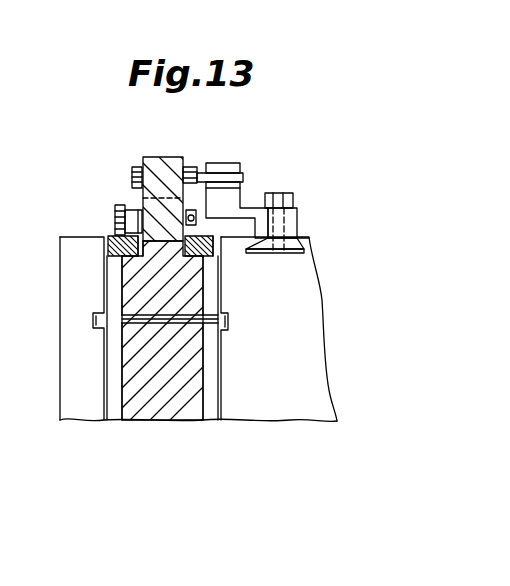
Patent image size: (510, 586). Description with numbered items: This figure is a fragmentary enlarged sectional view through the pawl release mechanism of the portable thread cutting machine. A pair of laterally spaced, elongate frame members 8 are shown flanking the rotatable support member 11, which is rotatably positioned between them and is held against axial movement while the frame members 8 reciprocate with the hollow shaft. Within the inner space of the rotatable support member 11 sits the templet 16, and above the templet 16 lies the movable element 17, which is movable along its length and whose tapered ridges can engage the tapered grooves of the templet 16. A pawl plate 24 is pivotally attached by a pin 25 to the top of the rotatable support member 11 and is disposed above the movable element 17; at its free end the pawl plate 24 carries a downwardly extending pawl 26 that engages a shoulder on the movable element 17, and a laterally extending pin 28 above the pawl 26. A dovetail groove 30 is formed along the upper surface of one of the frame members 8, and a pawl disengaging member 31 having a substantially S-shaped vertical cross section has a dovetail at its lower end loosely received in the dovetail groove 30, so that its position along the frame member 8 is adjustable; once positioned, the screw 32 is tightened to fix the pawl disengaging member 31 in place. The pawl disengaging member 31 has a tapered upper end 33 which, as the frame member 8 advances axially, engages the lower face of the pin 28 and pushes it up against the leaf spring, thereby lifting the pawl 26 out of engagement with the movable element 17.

The frame members 8 is at (67, 295).
The rotatable support member 11 is at (110, 238).
The templet 16 is at (158, 406).
The movable element 17 is at (193, 283).
The pawl plate 24 is at (150, 196).
The pawl 26 is at (158, 196).
The pin 25 is at (203, 190).
The pin 28 is at (190, 212).
The dovetail groove 30 is at (304, 256).
The pawl disengaging member 31 is at (292, 217).
The screw 32 is at (290, 199).
The tapered upper end 33 is at (231, 166).